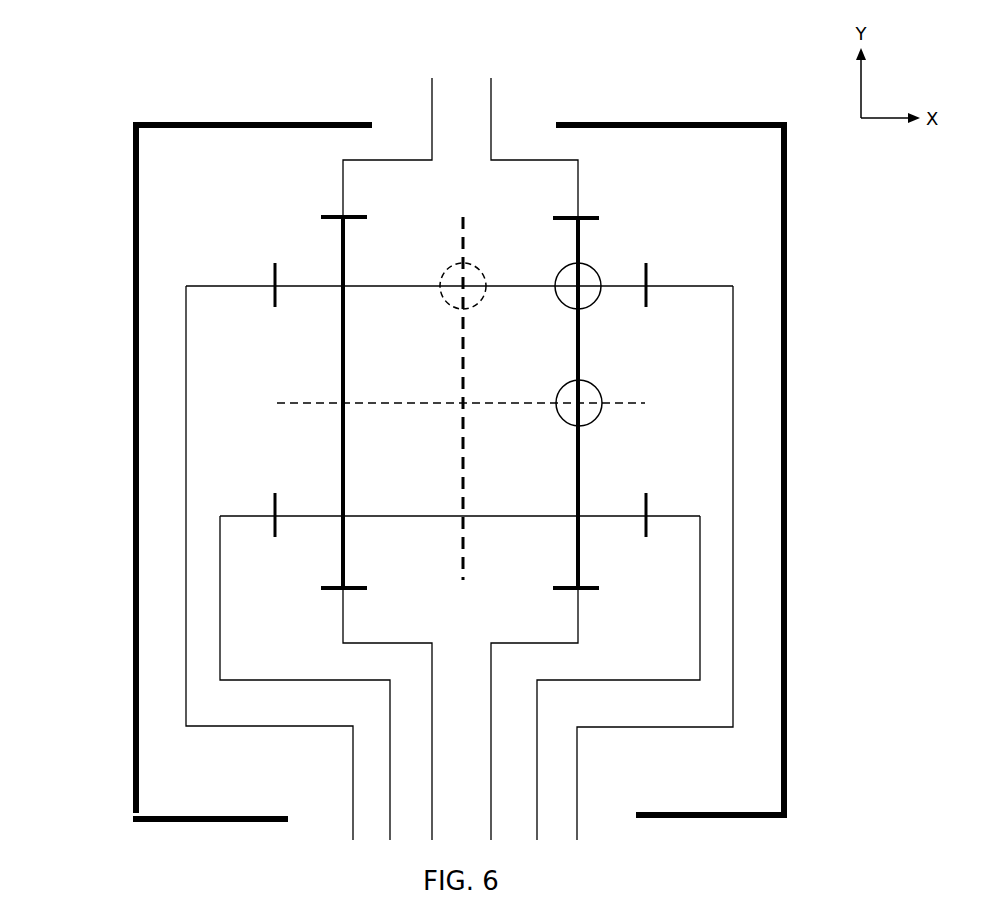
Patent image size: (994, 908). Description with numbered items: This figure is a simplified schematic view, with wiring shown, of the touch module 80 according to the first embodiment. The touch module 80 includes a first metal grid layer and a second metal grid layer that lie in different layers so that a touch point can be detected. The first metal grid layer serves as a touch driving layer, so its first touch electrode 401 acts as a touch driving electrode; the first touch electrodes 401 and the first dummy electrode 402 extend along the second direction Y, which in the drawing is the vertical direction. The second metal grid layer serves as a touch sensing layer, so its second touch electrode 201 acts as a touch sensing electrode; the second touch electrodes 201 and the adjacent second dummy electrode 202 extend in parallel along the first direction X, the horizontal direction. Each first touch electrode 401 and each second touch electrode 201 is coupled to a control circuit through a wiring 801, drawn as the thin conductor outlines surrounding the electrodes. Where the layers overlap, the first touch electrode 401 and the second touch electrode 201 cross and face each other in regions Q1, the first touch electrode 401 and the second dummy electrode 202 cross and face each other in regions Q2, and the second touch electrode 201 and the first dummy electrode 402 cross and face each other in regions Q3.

The touch module 80 is at (140, 62).
The wiring 801 is at (578, 177).
The second touch electrode 201 is at (312, 286).
The second dummy electrode 202 is at (322, 403).
The first touch electrode 401 is at (580, 462).
The first dummy electrode 402 is at (463, 573).
The regions where the first touch electrode and the second touch electrode cross Q1 is at (590, 272).
The regions where the first touch electrode and the second dummy electrode cross Q2 is at (588, 395).
The regions where the second touch electrode and the first dummy electrode cross Q3 is at (457, 278).